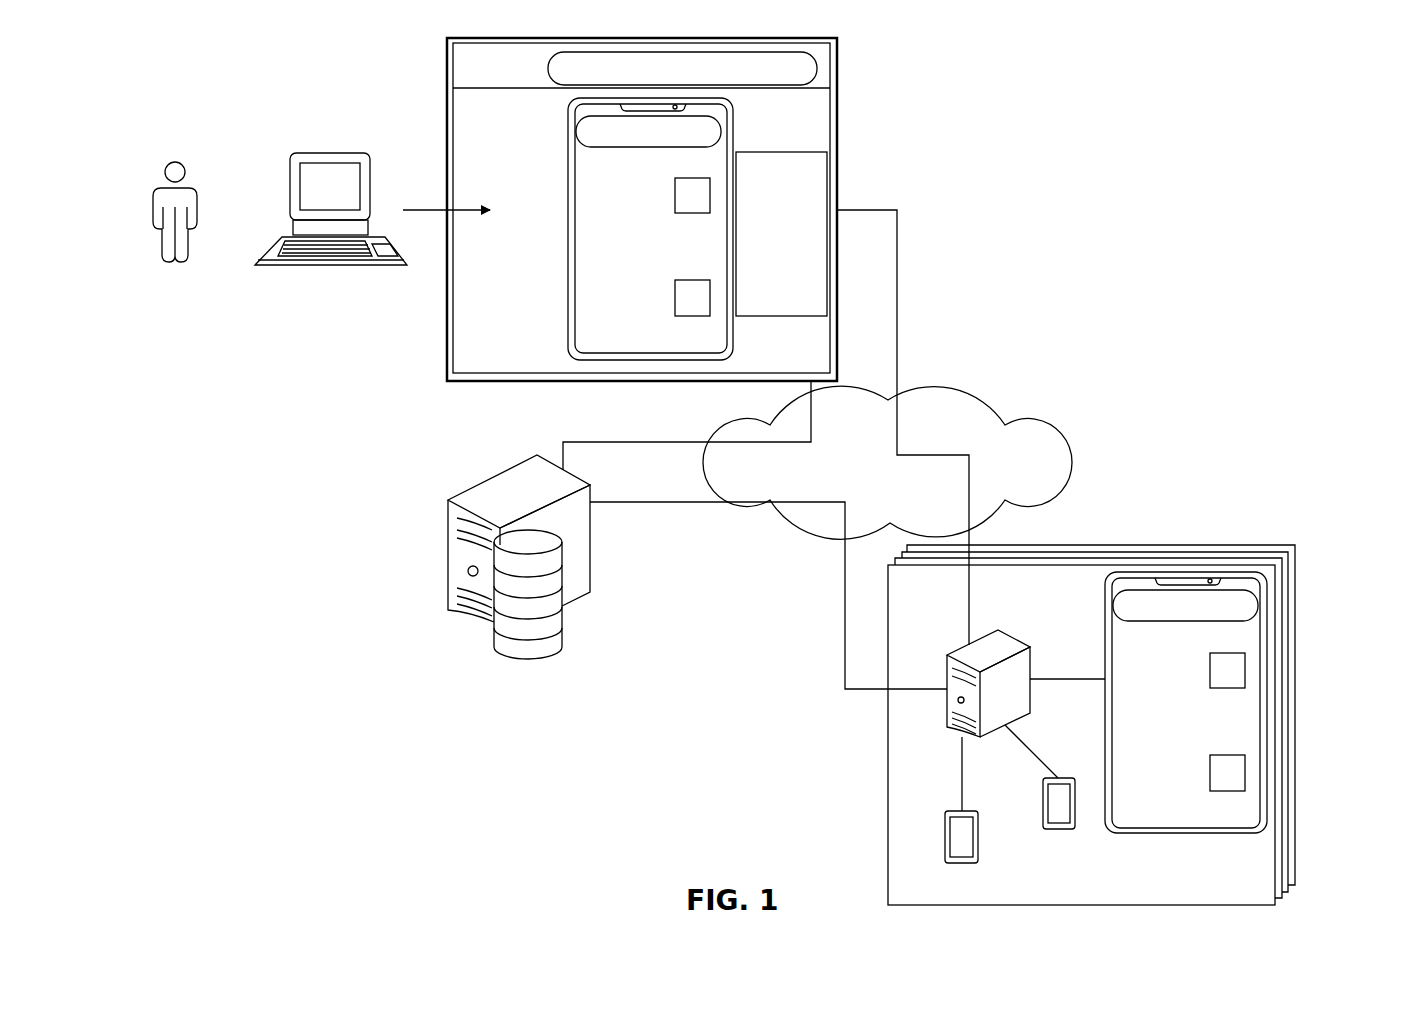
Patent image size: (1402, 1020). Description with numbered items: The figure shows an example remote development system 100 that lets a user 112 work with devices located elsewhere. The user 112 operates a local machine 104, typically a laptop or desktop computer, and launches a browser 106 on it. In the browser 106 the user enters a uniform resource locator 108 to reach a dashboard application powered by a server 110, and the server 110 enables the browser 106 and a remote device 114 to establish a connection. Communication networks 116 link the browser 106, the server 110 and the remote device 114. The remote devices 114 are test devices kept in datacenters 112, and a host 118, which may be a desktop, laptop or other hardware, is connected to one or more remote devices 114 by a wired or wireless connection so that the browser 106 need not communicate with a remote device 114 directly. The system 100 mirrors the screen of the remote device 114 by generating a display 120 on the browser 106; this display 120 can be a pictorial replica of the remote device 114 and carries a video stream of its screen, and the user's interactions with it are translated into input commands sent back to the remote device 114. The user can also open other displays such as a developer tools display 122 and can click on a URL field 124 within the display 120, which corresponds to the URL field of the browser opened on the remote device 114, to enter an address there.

The remote development system 100 is at (1120, 110).
The local machine 104 is at (332, 154).
The browser 106 is at (770, 38).
The uniform resource locator 108 is at (818, 76).
The server 110 is at (458, 454).
The user / datacenter 112 is at (170, 162).
The remote device 114 is at (1268, 685).
The communication network 116 is at (946, 388).
The host 118 is at (1015, 636).
The display 120 is at (568, 296).
The developer tools display 122 is at (750, 317).
The URL field 124 is at (723, 130).